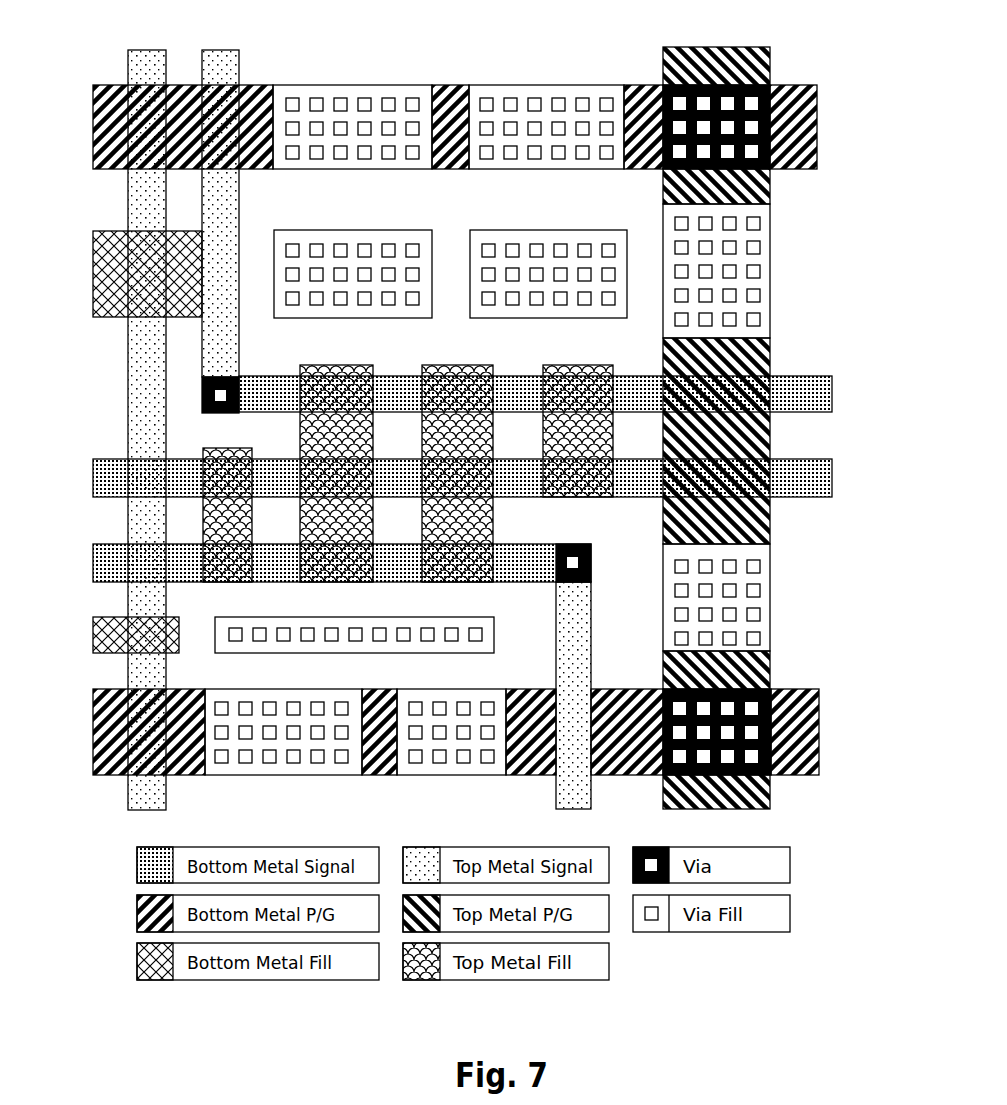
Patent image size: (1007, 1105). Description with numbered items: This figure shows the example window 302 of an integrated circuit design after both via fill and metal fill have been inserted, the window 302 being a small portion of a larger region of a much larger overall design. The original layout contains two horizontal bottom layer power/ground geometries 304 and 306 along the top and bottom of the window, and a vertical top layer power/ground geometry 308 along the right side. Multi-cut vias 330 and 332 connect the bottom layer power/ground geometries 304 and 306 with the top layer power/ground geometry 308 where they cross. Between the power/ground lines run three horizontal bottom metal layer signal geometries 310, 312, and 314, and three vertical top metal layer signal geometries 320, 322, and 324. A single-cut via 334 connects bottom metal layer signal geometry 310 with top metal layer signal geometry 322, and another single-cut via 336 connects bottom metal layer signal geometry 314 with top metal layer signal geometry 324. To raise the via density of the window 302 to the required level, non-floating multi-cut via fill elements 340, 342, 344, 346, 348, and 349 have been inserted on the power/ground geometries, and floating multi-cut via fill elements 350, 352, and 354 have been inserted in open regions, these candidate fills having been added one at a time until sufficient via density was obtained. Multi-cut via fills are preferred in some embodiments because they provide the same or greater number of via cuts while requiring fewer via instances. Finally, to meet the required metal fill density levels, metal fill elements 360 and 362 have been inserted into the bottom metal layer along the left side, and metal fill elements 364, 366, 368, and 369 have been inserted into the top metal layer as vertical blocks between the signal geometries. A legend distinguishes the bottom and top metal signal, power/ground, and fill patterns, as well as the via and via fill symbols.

The window 302 is at (832, 817).
The bottom layer power/ground geometry 304 is at (643, 84).
The bottom layer power/ground geometry 306 is at (820, 687).
The top layer power/ground geometry 308 is at (765, 46).
The bottom metal layer signal geometry 310 is at (807, 375).
The bottom metal layer signal geometry 312 is at (818, 459).
The bottom metal layer signal geometry 314 is at (103, 545).
The top metal layer signal geometry 320 is at (148, 50).
The top metal layer signal geometry 322 is at (227, 50).
The top metal layer signal geometry 324 is at (592, 633).
The multi-cut via 330 is at (770, 168).
The multi-cut via 332 is at (662, 687).
The single-cut via 334 is at (204, 413).
The single-cut via 336 is at (591, 545).
The non-floating via fill element 340 is at (350, 90).
The non-floating via fill element 342 is at (545, 88).
The non-floating via fill element 344 is at (765, 283).
The non-floating via fill element 346 is at (762, 597).
The non-floating via fill element 348 is at (258, 770).
The non-floating via fill element 349 is at (448, 771).
The floating via fill element 350 is at (330, 238).
The floating via fill element 352 is at (527, 235).
The floating via fill element 354 is at (498, 627).
The metal fill element 360 is at (103, 317).
The metal fill element 362 is at (95, 617).
The metal fill element 364 is at (252, 456).
The metal fill element 366 is at (300, 366).
The metal fill element 368 is at (443, 366).
The metal fill element 369 is at (582, 364).